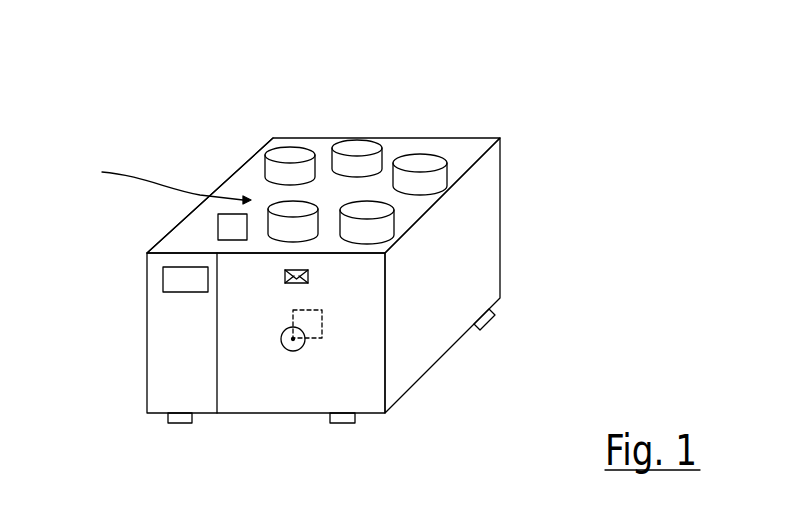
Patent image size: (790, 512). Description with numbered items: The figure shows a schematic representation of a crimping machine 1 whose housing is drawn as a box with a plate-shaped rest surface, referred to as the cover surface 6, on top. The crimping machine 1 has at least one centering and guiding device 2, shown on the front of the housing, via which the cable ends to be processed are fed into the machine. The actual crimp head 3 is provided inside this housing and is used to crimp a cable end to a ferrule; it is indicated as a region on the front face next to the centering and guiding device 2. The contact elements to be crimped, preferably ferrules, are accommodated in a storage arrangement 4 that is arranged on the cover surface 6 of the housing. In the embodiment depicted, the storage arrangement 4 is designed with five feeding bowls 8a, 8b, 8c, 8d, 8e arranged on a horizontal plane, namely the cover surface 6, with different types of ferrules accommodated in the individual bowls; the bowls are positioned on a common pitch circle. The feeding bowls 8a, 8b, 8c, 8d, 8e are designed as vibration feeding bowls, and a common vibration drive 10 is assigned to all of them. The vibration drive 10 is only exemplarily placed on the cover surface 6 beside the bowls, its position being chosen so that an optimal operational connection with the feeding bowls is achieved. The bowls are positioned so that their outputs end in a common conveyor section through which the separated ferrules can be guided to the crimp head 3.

The crimping machine 1 is at (452, 262).
The centering and guiding device 2 is at (293, 351).
The crimp head 3 is at (302, 320).
The storage arrangement 4 is at (166, 181).
The cover surface 6 is at (192, 238).
The feeding bowl 8a is at (290, 157).
The feeding bowl 8b is at (357, 150).
The feeding bowl 8c is at (420, 163).
The feeding bowl 8d is at (377, 228).
The feeding bowl 8e is at (280, 230).
The common vibration drive 10 is at (225, 226).